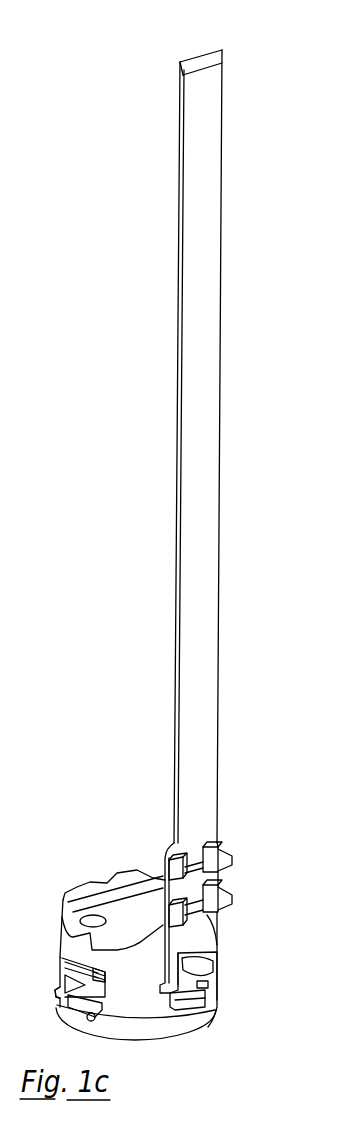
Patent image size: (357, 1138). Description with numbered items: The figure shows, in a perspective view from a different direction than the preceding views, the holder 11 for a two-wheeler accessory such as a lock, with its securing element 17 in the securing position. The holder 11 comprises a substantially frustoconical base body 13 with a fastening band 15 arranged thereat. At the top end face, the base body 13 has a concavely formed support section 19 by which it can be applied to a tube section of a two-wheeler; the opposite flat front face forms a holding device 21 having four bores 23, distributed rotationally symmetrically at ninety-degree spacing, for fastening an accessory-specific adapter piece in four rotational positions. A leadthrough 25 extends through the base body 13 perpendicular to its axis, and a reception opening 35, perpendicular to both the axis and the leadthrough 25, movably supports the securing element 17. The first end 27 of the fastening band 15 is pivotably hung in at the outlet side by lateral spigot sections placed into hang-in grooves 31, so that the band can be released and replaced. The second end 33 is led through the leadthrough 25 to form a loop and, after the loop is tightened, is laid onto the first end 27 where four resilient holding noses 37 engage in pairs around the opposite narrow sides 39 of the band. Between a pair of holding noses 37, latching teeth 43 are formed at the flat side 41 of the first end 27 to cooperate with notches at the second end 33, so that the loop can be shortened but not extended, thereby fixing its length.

The holder 11 is at (118, 653).
The base body 13 is at (133, 993).
The fastening band 15 is at (198, 443).
The securing element 17 is at (63, 970).
The support section 19 is at (152, 878).
The holding device 21 is at (140, 1041).
The bores 23 is at (86, 1022).
The leadthrough 25 is at (0, 980).
The first end 27 is at (192, 960).
The hang-in grooves 31 is at (200, 973).
The second end 33 is at (152, 183).
The reception opening 35 is at (56, 1012).
The holding noses 37 is at (170, 857).
The narrow sides 39 is at (183, 227).
The flat side 41 is at (198, 353).
The latching teeth 43 is at (203, 858).